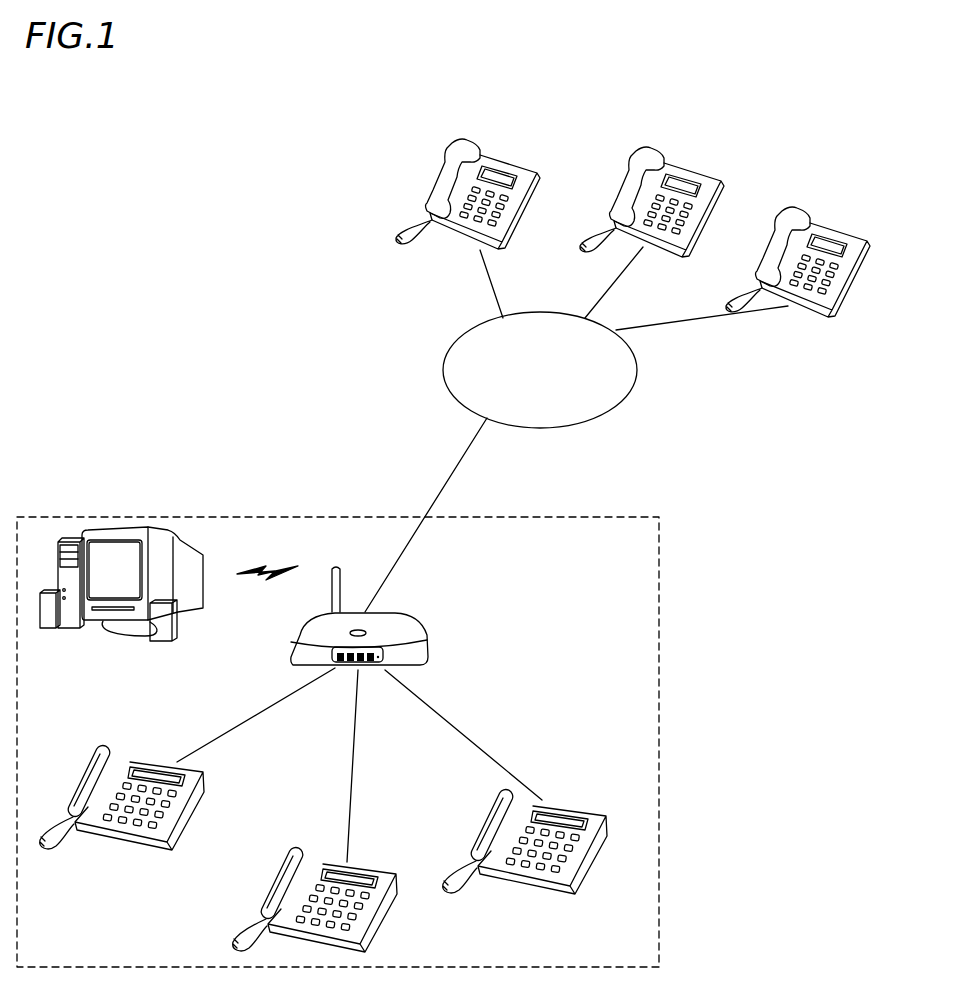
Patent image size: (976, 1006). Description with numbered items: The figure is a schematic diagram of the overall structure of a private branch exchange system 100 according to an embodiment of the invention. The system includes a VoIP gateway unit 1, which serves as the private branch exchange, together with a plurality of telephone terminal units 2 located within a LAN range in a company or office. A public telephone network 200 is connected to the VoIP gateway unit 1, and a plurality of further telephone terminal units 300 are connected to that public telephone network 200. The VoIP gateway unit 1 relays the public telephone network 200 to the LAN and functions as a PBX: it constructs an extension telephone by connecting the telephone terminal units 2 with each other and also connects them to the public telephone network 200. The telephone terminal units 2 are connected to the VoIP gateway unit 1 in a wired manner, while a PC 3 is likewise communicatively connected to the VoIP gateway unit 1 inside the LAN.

The VoIP gateway unit 1 is at (364, 612).
The telephone terminal unit 2 is at (155, 762).
The PC 3 is at (141, 528).
The private branch exchange system 100 is at (691, 523).
The public telephone network 200 is at (631, 390).
The telephone terminal unit 300 is at (499, 158).